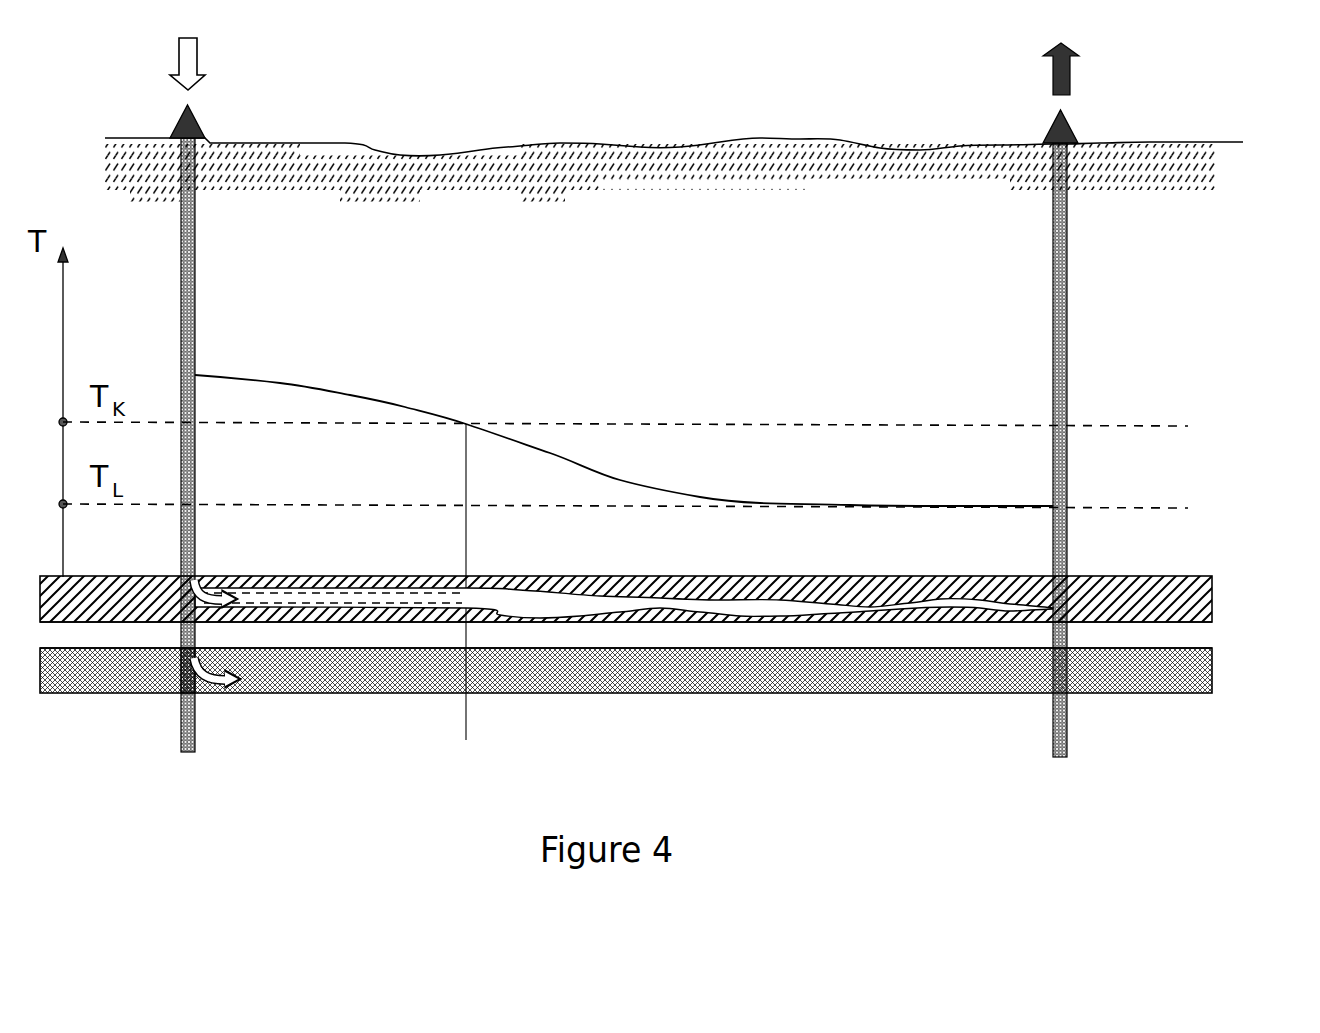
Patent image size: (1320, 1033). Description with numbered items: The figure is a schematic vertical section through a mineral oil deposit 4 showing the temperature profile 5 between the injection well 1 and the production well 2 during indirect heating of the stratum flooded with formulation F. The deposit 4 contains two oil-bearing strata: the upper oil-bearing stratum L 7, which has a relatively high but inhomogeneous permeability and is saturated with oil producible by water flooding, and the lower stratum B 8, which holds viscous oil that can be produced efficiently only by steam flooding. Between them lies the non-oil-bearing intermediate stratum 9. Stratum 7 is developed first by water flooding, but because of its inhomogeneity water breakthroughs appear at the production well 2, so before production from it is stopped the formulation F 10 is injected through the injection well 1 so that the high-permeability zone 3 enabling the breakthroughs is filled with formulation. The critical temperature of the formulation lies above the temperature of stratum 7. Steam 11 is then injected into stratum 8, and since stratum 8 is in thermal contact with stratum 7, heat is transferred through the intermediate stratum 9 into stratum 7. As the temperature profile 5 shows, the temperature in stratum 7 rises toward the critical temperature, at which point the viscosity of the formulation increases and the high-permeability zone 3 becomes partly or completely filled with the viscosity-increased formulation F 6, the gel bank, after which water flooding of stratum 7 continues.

The injection well 1 is at (193, 330).
The production well 2 is at (1068, 344).
The high-permeability zone 3 is at (922, 608).
The deposit 4 is at (1243, 495).
The temperature profile 5 is at (408, 405).
The formulation F in which the viscosity is increased 6 is at (283, 613).
The oil-bearing stratum L 7 is at (797, 578).
The stratum B 8 is at (727, 670).
The non-oil-bearing intermediate stratum 9 is at (583, 638).
The formulation F 10 is at (181, 650).
The steam 11 is at (231, 686).